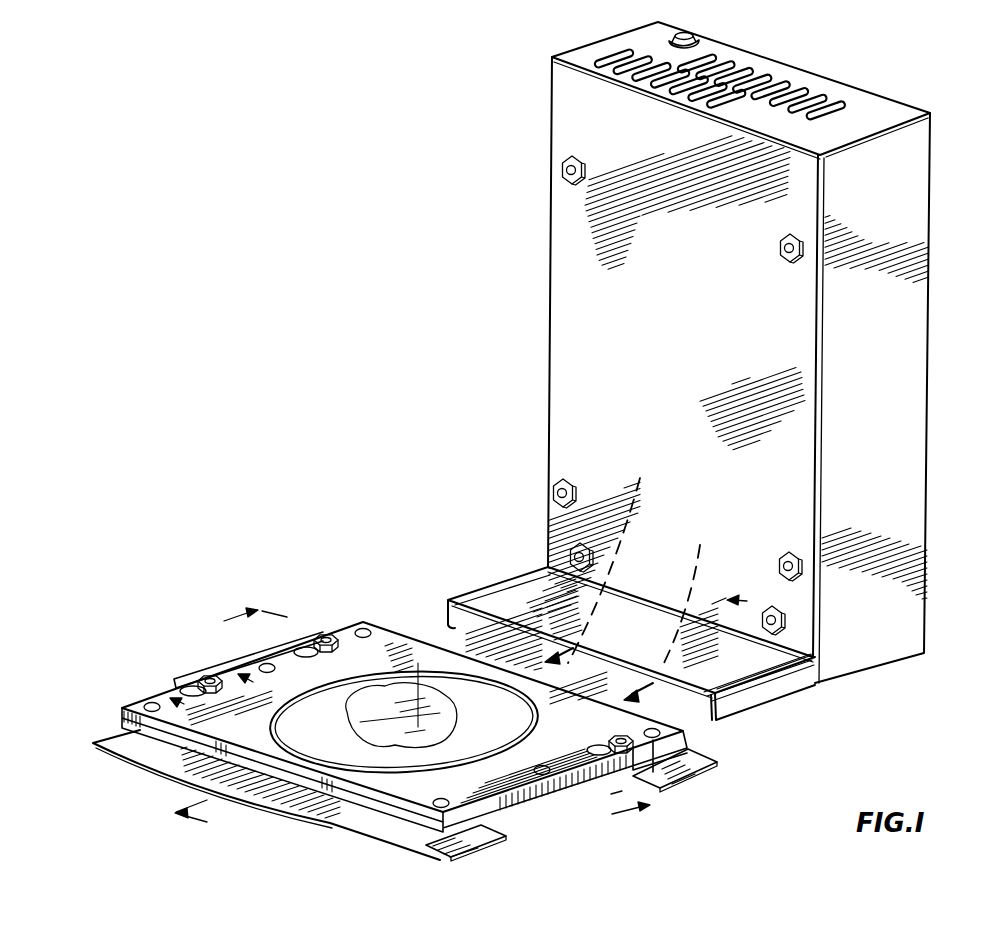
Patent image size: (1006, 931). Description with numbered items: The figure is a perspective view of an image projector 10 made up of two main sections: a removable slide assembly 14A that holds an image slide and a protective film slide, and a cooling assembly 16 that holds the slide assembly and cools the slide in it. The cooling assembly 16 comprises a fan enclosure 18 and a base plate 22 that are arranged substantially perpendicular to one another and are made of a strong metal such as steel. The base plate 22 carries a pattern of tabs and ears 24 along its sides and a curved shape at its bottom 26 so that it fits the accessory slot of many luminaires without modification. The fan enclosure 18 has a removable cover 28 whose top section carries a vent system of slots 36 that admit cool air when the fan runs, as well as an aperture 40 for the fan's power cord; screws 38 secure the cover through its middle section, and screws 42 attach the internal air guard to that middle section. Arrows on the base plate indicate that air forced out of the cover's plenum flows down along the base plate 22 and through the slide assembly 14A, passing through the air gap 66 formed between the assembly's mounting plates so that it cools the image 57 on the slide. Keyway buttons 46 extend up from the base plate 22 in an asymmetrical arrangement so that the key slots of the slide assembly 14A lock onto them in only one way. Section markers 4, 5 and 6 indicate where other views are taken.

The image projector 10 is at (536, 420).
The slide assembly 14A is at (377, 650).
The cooling assembly 16 is at (773, 656).
The fan enclosure 18 is at (888, 321).
The base plate 22 is at (714, 718).
The tabs and ears 24 is at (692, 767).
The curved bottom of the base plate 26 is at (277, 815).
The removable cover 28 is at (570, 273).
The slots 36 is at (848, 113).
The screws 38 is at (795, 553).
The aperture for power cord 40 is at (700, 34).
The screws 42 is at (783, 618).
The keyway buttons 46 is at (205, 675).
The image 57 is at (387, 738).
The air gap 66 is at (162, 737).
The section line 4- 4 is at (426, 718).
The section line 5- 5 is at (472, 711).
The section line 6- 6 is at (222, 698).